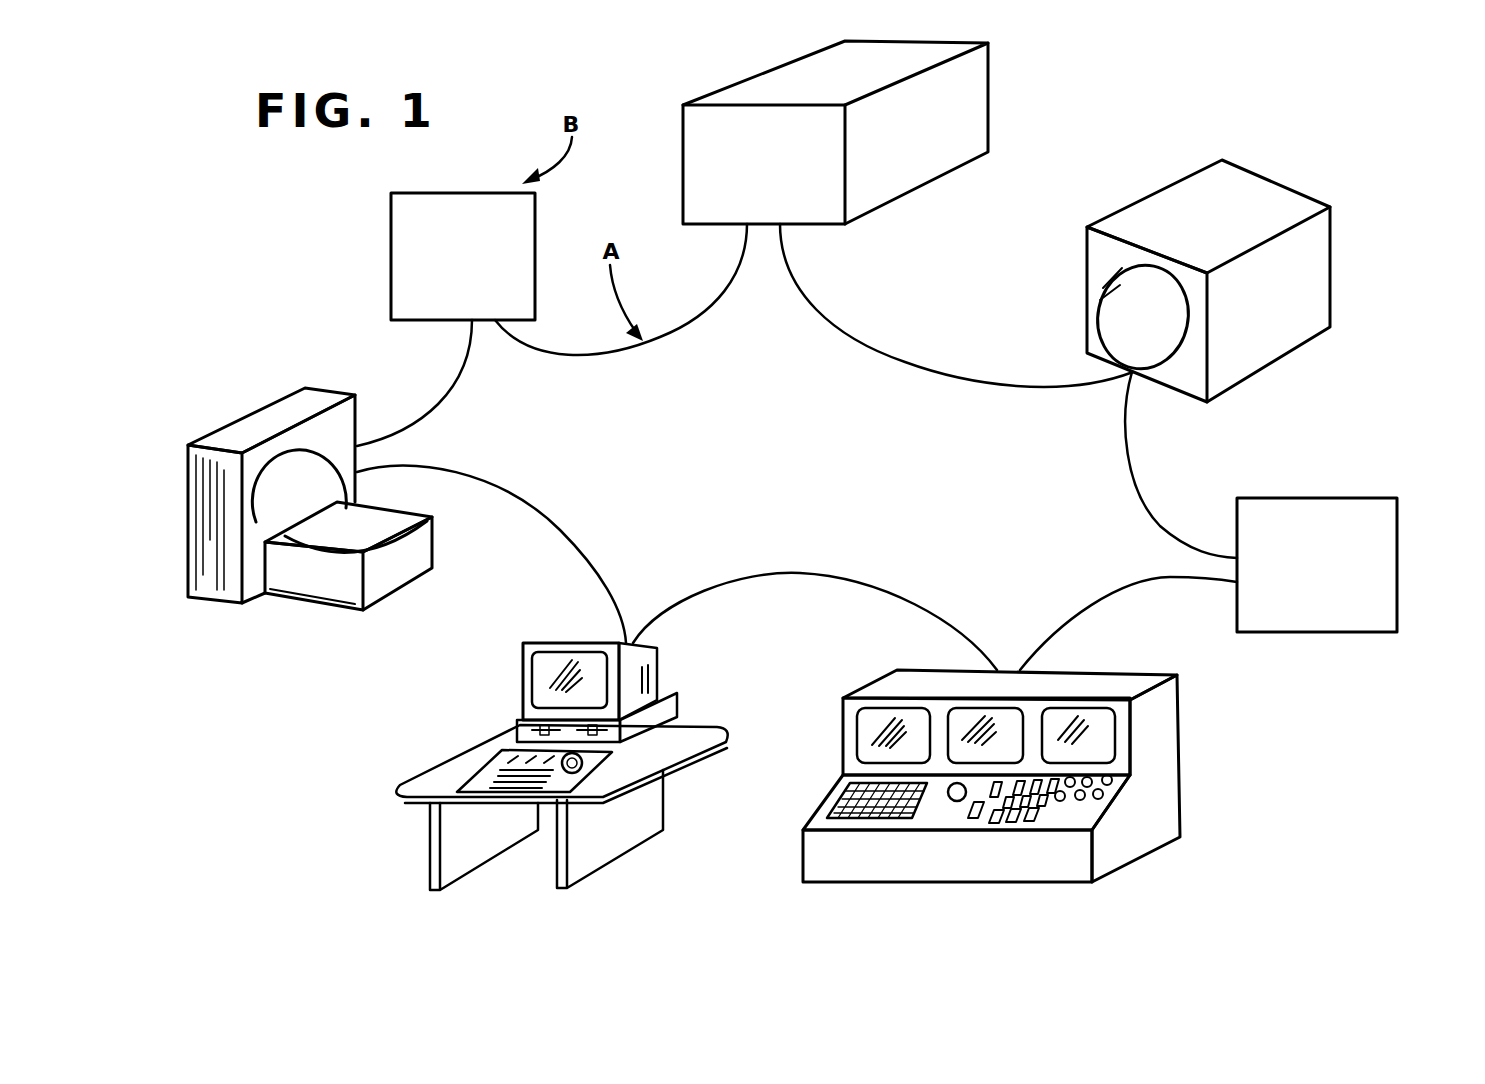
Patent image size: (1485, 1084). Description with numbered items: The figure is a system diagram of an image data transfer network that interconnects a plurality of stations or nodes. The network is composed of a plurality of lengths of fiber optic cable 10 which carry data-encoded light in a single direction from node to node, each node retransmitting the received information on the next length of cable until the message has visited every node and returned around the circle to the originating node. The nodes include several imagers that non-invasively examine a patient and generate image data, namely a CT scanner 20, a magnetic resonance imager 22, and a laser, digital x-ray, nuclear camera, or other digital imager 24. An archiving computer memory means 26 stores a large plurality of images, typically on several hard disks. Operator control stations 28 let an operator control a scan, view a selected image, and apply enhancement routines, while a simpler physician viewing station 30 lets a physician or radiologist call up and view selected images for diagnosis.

The fiber optic cable 10 is at (540, 347).
The CT scanner 20 is at (272, 412).
The magnetic resonance imager 22 is at (1308, 272).
The digital imager 24 is at (389, 229).
The archiving computer memory means 26 is at (970, 92).
The operator control station 28 is at (680, 698).
The physician viewing station 30 is at (1318, 498).